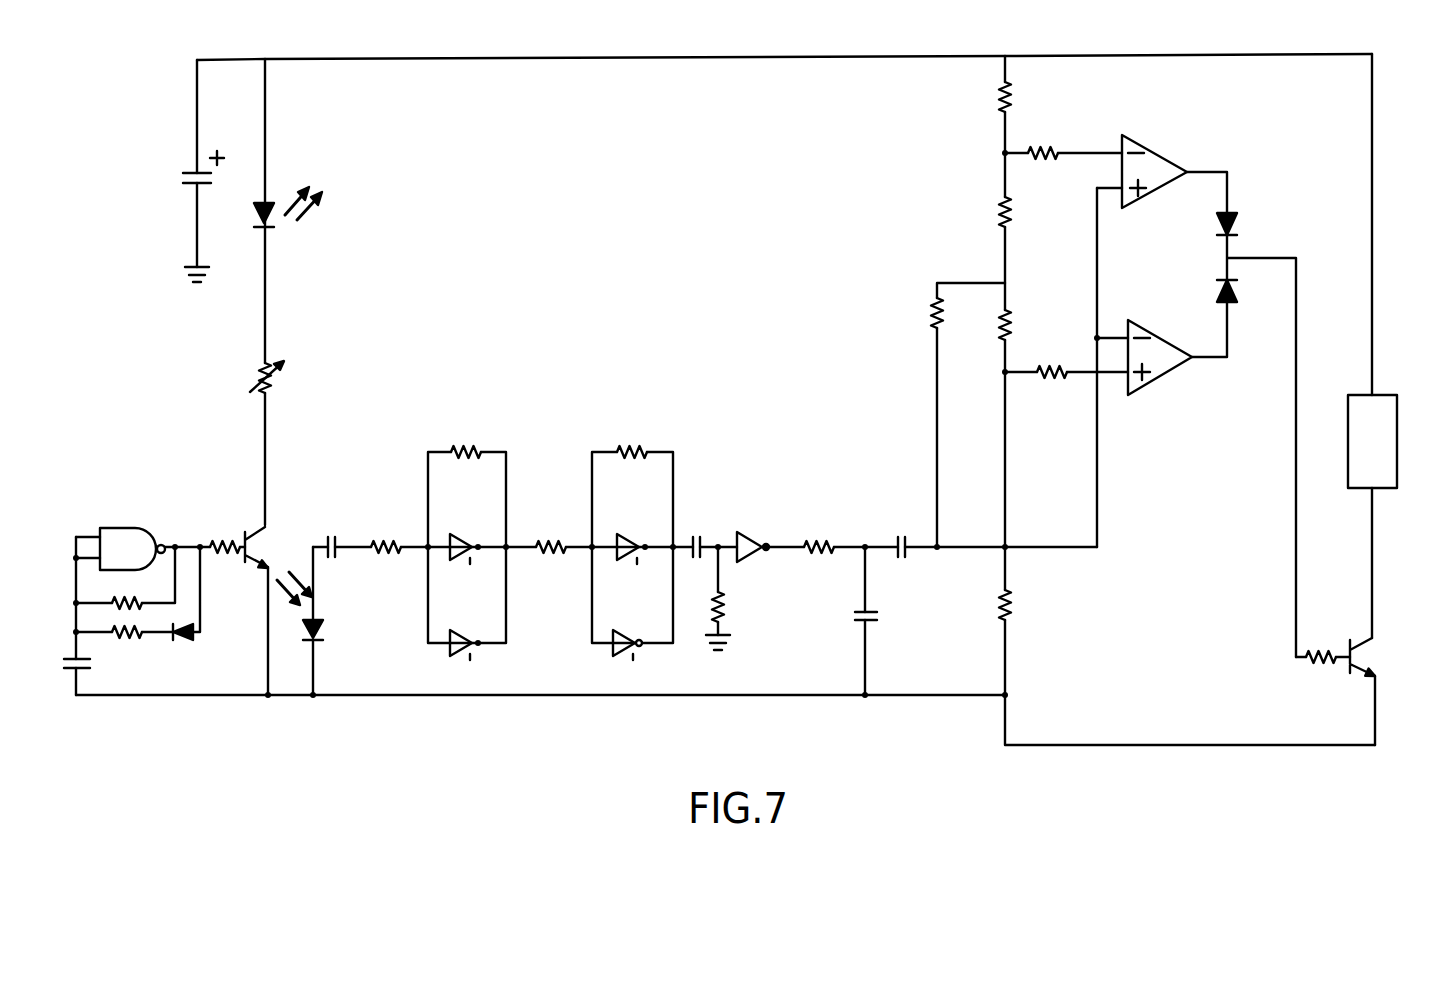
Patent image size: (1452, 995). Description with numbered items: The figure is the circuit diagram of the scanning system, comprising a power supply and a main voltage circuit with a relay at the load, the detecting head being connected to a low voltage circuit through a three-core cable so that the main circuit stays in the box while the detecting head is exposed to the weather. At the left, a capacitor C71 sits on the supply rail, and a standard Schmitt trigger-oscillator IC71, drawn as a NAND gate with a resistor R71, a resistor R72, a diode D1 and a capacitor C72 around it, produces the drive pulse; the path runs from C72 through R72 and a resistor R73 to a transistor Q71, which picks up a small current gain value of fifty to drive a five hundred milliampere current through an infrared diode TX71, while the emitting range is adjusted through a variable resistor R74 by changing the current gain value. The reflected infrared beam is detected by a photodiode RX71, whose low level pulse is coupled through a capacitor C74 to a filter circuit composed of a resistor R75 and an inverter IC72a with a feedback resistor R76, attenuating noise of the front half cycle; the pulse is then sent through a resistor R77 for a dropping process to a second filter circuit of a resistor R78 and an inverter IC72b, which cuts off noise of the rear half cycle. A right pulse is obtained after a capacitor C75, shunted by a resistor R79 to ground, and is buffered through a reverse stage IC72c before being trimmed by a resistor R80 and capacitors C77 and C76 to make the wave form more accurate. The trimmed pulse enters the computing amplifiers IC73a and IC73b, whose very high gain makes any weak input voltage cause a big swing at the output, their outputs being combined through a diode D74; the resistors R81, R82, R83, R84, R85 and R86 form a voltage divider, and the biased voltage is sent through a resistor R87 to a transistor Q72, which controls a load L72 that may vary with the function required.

The capacitor C71 is at (195, 172).
The infrared diode TX71 is at (272, 210).
The resistor R74 is at (285, 374).
The Schmitt trigger-oscillator IC71 is at (125, 527).
The resistor R73 is at (220, 540).
The transistor Q71 is at (256, 560).
The resistor R71 is at (133, 589).
The resistor R72 is at (137, 654).
The diode D1 is at (192, 640).
The capacitor C72 is at (75, 672).
The photodiode RX71 is at (320, 634).
The capacitor C74 is at (332, 540).
The resistor R75 is at (392, 540).
The resistor R76 is at (472, 450).
The inverter amplifier IC72a is at (467, 574).
The resistor R77 is at (547, 543).
The resistor R78 is at (638, 450).
The inverter amplifier IC72b is at (634, 574).
The capacitor C75 is at (698, 537).
The resistor R79 is at (726, 603).
The reverse stage IC72c is at (781, 613).
The resistor R80 is at (818, 540).
The capacitor C76 is at (870, 620).
The capacitor C77 is at (900, 537).
The resistor R81 is at (997, 83).
The resistor R82 is at (1052, 152).
The resistor R83 is at (997, 198).
The computing amplifier IC73a is at (1163, 152).
The resistor R84 is at (1000, 313).
The resistor R85 is at (1058, 370).
The computing amplifier IC73b is at (1157, 333).
The diode D74 is at (1248, 257).
The load L72 is at (1372, 441).
The transistor Q72 is at (1362, 667).
The resistor R86 is at (1012, 600).
The resistor R87 is at (1306, 660).